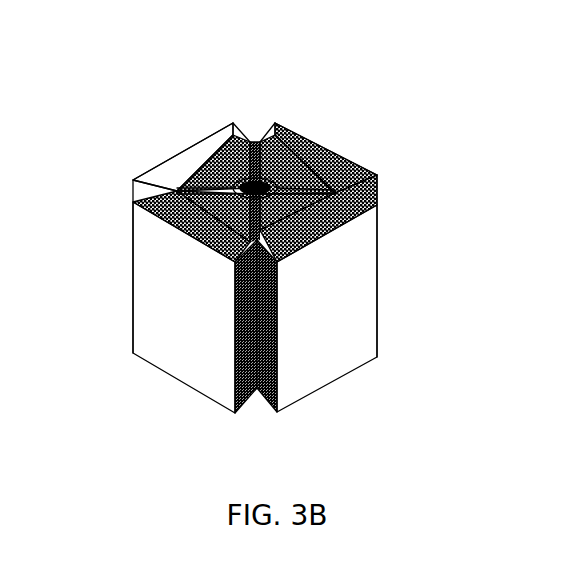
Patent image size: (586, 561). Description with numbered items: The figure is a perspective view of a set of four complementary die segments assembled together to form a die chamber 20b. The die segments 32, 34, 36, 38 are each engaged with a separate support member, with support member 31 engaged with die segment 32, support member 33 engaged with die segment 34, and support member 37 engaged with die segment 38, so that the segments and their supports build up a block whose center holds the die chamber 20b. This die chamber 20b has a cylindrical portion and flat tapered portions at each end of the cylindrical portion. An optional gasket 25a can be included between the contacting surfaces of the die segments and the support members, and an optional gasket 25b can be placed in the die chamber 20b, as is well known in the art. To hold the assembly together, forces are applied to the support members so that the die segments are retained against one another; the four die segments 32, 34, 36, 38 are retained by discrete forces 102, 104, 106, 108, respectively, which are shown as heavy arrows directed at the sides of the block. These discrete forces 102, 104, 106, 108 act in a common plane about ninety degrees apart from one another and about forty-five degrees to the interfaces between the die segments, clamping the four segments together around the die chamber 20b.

The die chamber 20b is at (251, 180).
The gasket 25a is at (309, 186).
The gasket 25b is at (263, 180).
The support member 31 is at (183, 157).
The die segment 32 is at (213, 163).
The support member 33 is at (326, 158).
The die segment 34 is at (297, 164).
The die segment 36 is at (297, 211).
The support member 37 is at (191, 226).
The die segment 38 is at (213, 216).
The discrete force 102 is at (161, 161).
The discrete force 104 is at (342, 151).
The discrete force 106 is at (329, 307).
The discrete force 108 is at (181, 309).